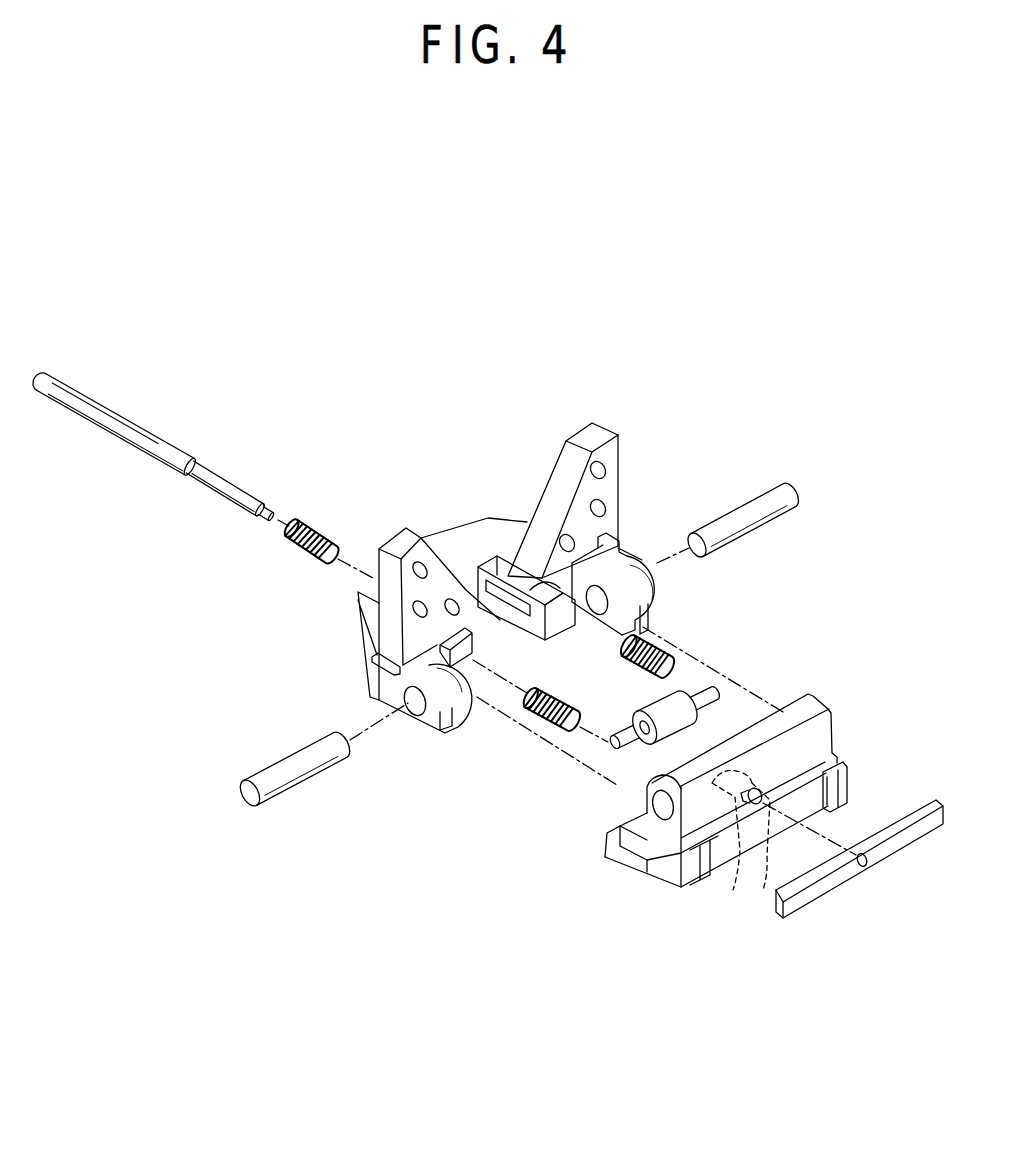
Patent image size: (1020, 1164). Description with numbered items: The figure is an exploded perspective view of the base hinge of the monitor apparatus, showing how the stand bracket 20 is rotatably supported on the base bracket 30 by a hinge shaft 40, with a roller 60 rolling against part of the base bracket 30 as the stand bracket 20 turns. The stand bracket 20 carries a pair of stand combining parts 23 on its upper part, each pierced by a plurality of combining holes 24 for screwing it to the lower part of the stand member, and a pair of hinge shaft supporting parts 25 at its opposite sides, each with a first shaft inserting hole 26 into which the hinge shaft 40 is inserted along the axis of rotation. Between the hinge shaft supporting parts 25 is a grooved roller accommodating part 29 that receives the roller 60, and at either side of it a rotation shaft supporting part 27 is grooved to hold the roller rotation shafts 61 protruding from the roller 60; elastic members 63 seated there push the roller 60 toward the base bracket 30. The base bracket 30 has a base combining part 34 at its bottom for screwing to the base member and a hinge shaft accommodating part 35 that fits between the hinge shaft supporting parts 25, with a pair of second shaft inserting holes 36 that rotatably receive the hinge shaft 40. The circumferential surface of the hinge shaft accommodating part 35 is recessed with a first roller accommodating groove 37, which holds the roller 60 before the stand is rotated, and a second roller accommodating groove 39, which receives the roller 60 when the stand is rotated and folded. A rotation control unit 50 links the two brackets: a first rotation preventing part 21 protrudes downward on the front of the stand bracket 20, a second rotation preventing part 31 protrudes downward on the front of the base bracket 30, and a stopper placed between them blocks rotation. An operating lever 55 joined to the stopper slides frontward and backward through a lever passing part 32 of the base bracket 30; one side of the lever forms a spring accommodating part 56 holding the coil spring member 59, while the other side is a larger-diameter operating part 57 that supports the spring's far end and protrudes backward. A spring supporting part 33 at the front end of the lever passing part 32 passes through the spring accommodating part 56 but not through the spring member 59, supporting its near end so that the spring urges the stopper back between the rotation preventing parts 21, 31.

The stand bracket 20 is at (435, 527).
The first rotation preventing part 21 is at (645, 620).
The stand combining part 23 is at (527, 493).
The combining hole 24 is at (610, 500).
The hinge shaft supporting part 25 is at (652, 590).
The first shaft inserting hole 26 is at (599, 598).
The rotation shaft supporting part 27 is at (547, 603).
The roller accommodating part 29 is at (487, 627).
The base bracket 30 is at (670, 912).
The second rotation preventing part 31 is at (720, 840).
The lever passing part 32 is at (733, 890).
The spring supporting part 33 is at (760, 806).
The base combining part 34 is at (650, 870).
The hinge shaft accommodating part 35 is at (601, 917).
The second shaft inserting hole 36 is at (663, 812).
The first roller accommodating groove 37 is at (645, 815).
The second roller accommodating groove 39 is at (645, 790).
The hinge shaft 40 is at (290, 760).
The rotation control unit 50 is at (820, 890).
The operating lever 55 is at (277, 407).
The spring accommodating part 56 is at (225, 473).
The operating part 57 is at (150, 428).
The spring member 59 is at (302, 517).
The roller 60 is at (700, 722).
The roller rotation shaft 61 is at (716, 684).
The elastic member 63 is at (632, 668).